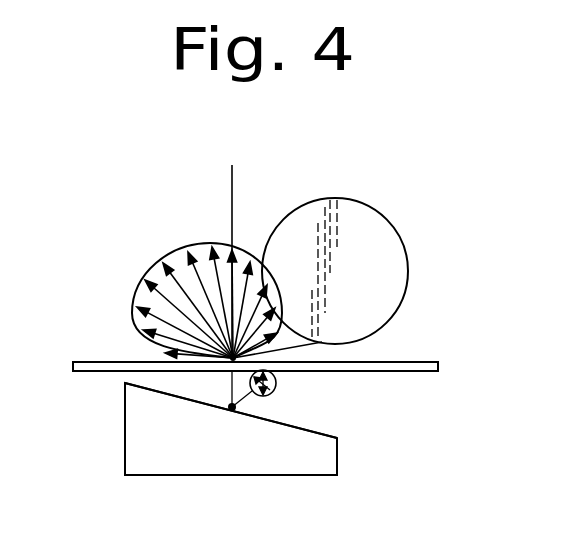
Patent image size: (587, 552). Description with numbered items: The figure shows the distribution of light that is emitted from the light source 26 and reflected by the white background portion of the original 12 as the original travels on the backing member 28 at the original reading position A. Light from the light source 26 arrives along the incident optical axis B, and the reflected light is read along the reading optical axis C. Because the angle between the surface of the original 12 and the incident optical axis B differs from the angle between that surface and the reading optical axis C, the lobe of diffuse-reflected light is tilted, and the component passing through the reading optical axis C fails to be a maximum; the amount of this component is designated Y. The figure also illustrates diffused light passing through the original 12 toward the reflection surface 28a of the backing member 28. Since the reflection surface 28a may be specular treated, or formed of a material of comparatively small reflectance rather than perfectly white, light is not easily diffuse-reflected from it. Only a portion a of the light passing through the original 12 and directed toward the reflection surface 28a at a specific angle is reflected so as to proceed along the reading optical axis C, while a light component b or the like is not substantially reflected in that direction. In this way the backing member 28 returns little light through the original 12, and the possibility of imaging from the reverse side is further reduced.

The original 12 is at (418, 362).
The light source 26 is at (385, 228).
The backing member 28 is at (215, 453).
The reflection surface 28a is at (318, 431).
The original reading position A is at (232, 360).
The incident optical axis B is at (322, 345).
The reading optical axis C is at (232, 190).
The amount of light Y is at (232, 247).
The portion of the light a is at (248, 400).
The light component b is at (274, 394).